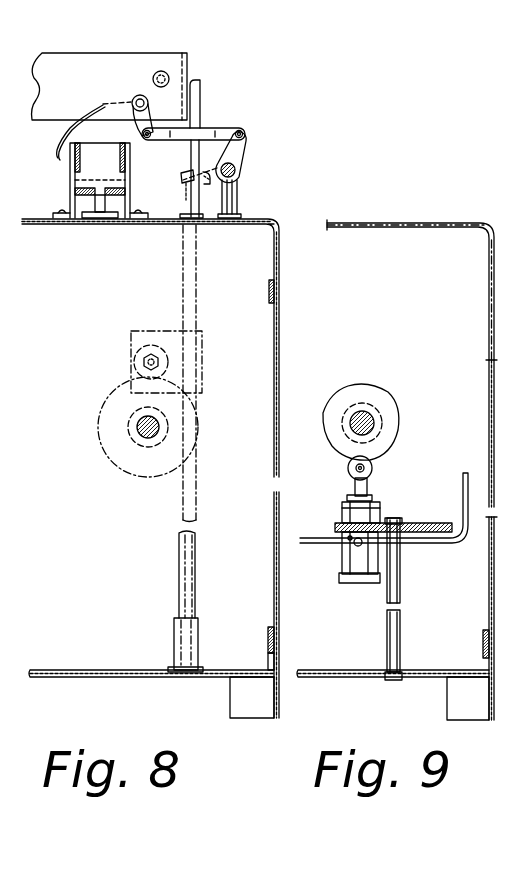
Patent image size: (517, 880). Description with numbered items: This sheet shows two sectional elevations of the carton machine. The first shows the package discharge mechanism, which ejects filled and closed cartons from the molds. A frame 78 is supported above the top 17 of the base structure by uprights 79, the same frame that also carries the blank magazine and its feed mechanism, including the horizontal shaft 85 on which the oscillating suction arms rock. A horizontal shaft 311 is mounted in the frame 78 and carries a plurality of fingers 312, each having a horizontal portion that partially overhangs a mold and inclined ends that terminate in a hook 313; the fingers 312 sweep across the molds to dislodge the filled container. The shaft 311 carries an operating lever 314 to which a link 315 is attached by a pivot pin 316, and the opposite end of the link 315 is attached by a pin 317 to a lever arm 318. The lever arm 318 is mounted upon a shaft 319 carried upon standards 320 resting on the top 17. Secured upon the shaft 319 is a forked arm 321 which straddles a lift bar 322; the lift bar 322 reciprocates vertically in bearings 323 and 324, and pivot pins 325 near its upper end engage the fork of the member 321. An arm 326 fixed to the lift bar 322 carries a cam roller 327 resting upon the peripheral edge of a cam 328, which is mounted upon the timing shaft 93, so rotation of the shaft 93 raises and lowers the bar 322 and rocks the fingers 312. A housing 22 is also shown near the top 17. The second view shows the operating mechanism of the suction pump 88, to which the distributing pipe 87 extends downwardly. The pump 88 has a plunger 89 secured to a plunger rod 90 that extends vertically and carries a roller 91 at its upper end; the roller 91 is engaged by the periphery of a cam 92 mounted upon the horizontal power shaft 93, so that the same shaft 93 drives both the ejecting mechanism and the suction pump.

In FIG. 8, the frame 78 is at (170, 66).
In FIG. 8, the horizontal shaft 85 is at (169, 79).
In FIG. 8, the uprights 79 is at (193, 106).
In FIG. 8, the horizontal shaft 311 is at (138, 99).
In FIG. 8, the fingers 312 is at (62, 132).
In FIG. 8, the hook 313 is at (57, 158).
In FIG. 8, the operating lever 314 is at (148, 116).
In FIG. 8, the link 315 is at (212, 132).
In FIG. 8, the pivot pin 316 is at (147, 138).
In FIG. 8, the pin 317 is at (242, 132).
In FIG. 8, the lever arm 318 is at (241, 150).
In FIG. 8, the shaft 319 is at (238, 170).
In FIG. 8, the standards 320 is at (234, 197).
In FIG. 8, the forked arm 321 is at (209, 184).
In FIG. 8, the pivot pins 325 is at (186, 184).
In FIG. 8, the spring housing 22 is at (107, 205).
In FIG. 8, the top 17 is at (268, 221).
In FIG. 9, the top 17 is at (423, 223).
In FIG. 8, the bearing 323 is at (200, 223).
In FIG. 8, the lift bar 322 is at (183, 266).
In FIG. 8, the arm 326 is at (176, 345).
In FIG. 8, the cam roller 327 is at (141, 368).
In FIG. 8, the cam 328 is at (100, 443).
In FIG. 8, the power shaft 93 is at (143, 438).
In FIG. 9, the power shaft 93 is at (360, 415).
In FIG. 8, the bearing 324 is at (202, 651).
In FIG. 9, the cam 92 is at (383, 405).
In FIG. 9, the roller 91 is at (372, 459).
In FIG. 9, the plunger rod 90 is at (371, 489).
In FIG. 9, the plunger 89 is at (342, 522).
In FIG. 9, the suction pump 88 is at (352, 561).
In FIG. 9, the distributing pipe 87 is at (463, 491).